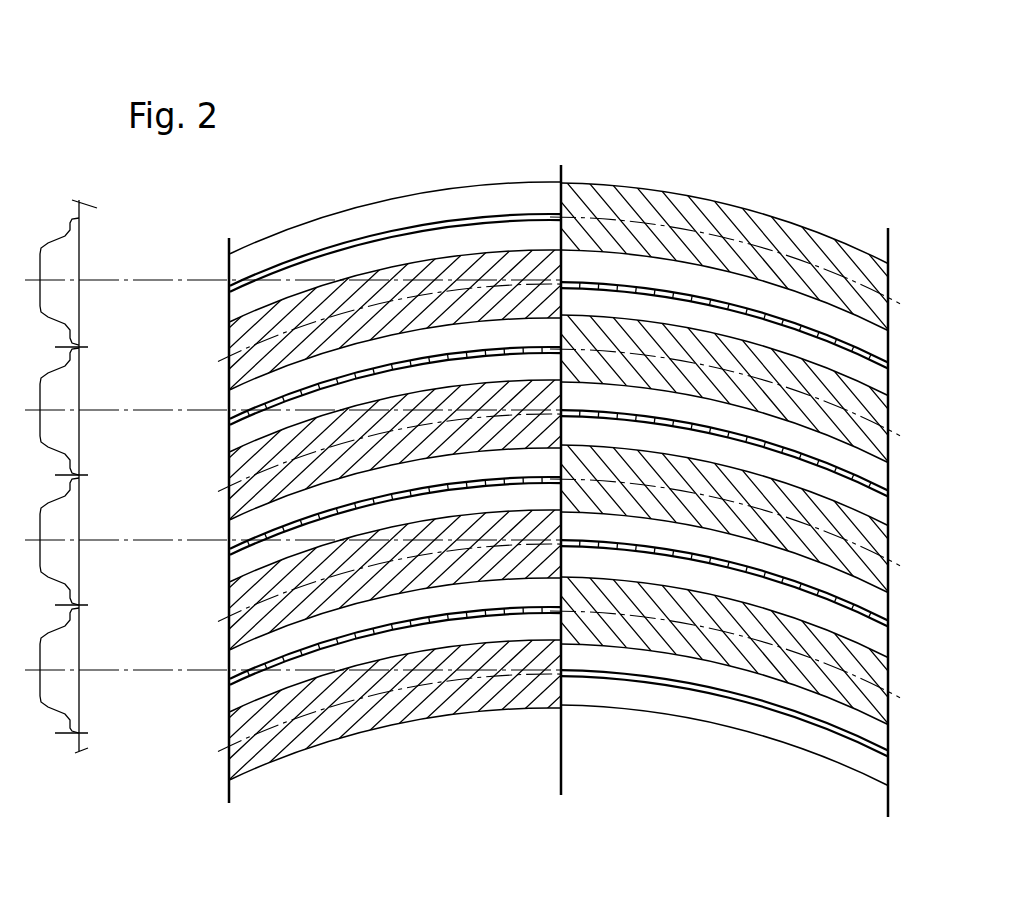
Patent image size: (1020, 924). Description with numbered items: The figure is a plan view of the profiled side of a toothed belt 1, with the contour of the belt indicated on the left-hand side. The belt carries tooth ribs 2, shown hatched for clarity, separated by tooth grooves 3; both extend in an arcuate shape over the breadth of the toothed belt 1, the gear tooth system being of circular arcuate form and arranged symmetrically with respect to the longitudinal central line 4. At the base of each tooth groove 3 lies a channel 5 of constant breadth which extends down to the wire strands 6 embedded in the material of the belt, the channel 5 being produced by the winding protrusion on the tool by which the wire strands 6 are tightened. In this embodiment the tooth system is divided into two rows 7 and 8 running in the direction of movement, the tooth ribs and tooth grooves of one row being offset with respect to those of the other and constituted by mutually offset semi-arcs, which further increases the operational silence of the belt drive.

The toothed belt 1 is at (508, 745).
The tooth ribs 2 is at (597, 237).
The tooth grooves 3 is at (492, 238).
The longitudinal central line 4 is at (561, 758).
The channel 5 is at (678, 290).
The wire strands 6 is at (79, 592).
The first row 7 is at (388, 183).
The second row 8 is at (727, 138).